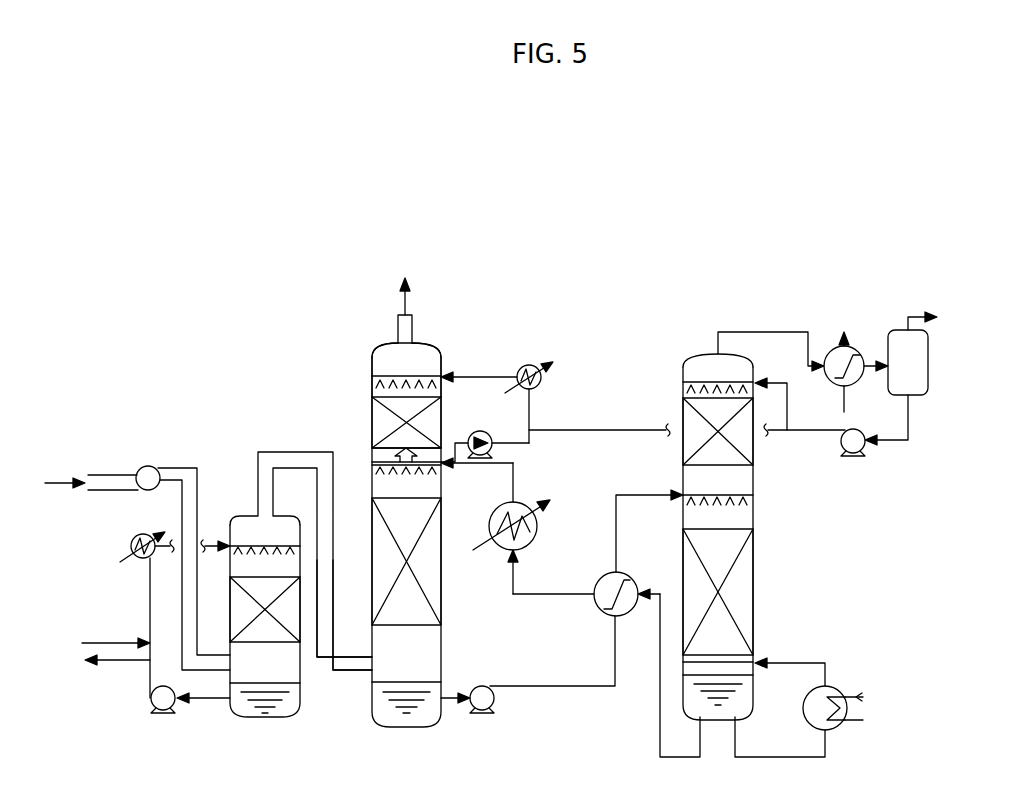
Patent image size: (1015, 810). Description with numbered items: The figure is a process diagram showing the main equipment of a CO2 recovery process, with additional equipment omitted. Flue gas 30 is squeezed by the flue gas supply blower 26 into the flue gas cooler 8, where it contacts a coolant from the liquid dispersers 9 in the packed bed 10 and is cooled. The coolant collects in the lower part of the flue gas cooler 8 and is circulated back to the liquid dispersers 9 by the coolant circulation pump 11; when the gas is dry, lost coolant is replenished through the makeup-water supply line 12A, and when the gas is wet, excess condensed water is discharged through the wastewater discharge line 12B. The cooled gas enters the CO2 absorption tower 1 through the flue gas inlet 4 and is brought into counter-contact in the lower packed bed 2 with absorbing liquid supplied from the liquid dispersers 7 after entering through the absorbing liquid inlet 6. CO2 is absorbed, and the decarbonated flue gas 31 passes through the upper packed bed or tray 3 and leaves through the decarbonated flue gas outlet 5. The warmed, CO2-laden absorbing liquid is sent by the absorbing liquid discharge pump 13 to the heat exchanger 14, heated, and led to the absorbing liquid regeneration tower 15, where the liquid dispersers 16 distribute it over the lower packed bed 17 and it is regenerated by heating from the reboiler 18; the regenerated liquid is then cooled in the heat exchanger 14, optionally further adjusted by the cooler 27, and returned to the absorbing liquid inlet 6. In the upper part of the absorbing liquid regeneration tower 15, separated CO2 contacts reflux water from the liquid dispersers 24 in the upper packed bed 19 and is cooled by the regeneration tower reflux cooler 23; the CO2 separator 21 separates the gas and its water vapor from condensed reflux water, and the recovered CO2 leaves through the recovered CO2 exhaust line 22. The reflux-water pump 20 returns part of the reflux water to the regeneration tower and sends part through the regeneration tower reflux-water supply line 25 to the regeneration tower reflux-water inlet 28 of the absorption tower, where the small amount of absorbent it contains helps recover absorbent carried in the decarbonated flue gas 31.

The CO2 absorption tower 1 is at (427, 422).
The lower packed bed 2 is at (432, 593).
The upper packed bed or tray 3 is at (452, 426).
The flue gas inlet 4 is at (340, 665).
The decarbonated flue gas outlet 5 is at (397, 330).
The absorbing liquid inlet 6 is at (450, 468).
The liquid dispersers 7 is at (397, 470).
The flue gas cooler 8 is at (287, 517).
The liquid dispersers 9 is at (277, 558).
The packed bed 10 is at (243, 612).
The coolant circulation pump 11 is at (152, 703).
The makeup-water supply line 12A is at (112, 641).
The wastewater discharge line 12B is at (120, 663).
The absorbing liquid discharge pump 13 is at (477, 713).
The heat exchanger 14 is at (625, 575).
The absorbing liquid regeneration tower 15 is at (755, 483).
The liquid dispersers 16 is at (743, 505).
The lower packed bed 17 is at (742, 583).
The reboiler 18 is at (847, 721).
The upper packed bed 19 is at (746, 440).
The reflux-water pump 20 is at (865, 447).
The CO2 separator 21 is at (928, 366).
The recovered CO2 exhaust line 22 is at (918, 312).
The regeneration tower reflux cooler 23 is at (855, 348).
The liquid dispersers 24 is at (705, 380).
The regeneration tower reflux-water supply line 25 is at (633, 428).
The flue gas supply blower 26 is at (150, 466).
The cooler 27 is at (537, 535).
The regeneration tower reflux-water inlet 28 is at (445, 365).
The flue gas 30 is at (63, 481).
The decarbonated flue gas 31 is at (408, 300).